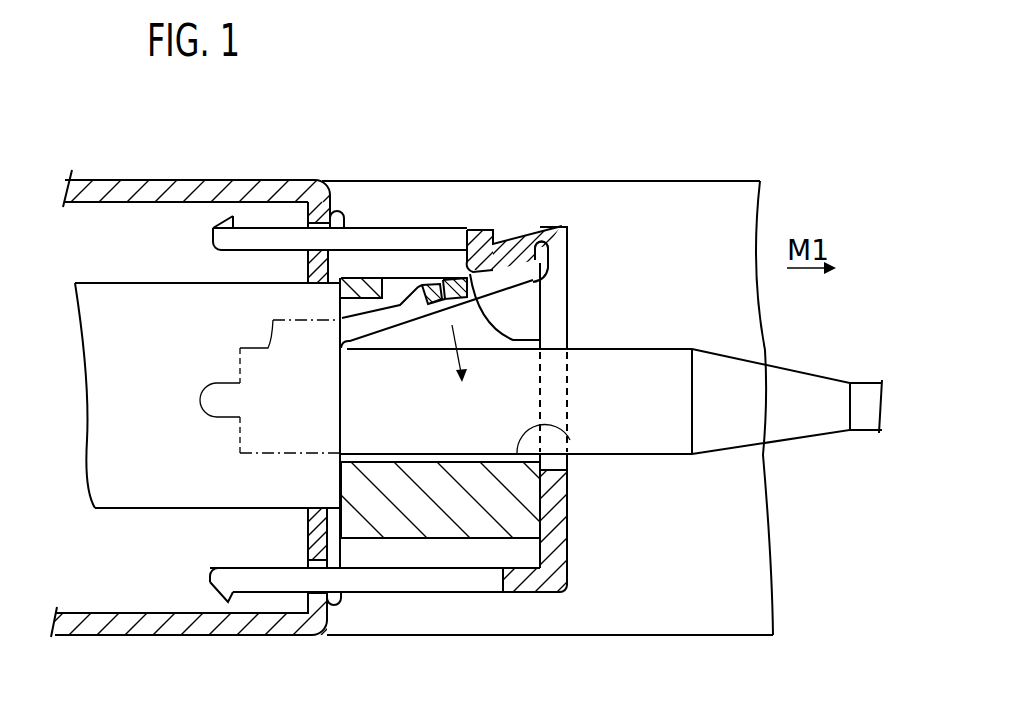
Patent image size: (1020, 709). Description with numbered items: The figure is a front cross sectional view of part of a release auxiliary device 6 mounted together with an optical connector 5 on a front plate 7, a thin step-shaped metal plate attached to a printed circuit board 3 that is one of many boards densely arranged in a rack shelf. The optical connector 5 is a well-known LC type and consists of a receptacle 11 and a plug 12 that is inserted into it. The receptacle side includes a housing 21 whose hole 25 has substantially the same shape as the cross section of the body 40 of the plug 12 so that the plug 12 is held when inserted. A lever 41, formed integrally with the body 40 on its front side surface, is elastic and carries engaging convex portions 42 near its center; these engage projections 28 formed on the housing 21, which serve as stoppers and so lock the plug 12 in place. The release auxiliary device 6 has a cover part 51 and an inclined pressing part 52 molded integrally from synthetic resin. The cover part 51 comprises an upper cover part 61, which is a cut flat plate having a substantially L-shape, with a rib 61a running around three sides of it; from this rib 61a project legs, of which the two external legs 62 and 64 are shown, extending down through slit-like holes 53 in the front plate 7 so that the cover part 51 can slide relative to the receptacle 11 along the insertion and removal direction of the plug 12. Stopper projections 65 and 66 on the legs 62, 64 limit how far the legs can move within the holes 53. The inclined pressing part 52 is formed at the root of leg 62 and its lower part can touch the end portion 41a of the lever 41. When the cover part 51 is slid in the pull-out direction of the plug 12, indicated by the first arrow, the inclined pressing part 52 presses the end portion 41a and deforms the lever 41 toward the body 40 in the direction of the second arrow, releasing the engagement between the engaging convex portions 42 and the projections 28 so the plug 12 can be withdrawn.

The printed circuit board 3 is at (428, 612).
The optical connector 5 is at (545, 150).
The release auxiliary device 6 is at (589, 339).
The front plate 7 is at (158, 627).
The receptacle 11 is at (86, 492).
The plug 12 is at (612, 358).
The housing 21 is at (467, 525).
The hole 25 is at (570, 440).
The projections 28 is at (453, 283).
The body 40 is at (632, 397).
The lever 41 is at (482, 232).
The end portion 41a is at (547, 240).
The engaging convex portions 42 is at (428, 290).
The cover part 51 is at (569, 273).
The inclined pressing part 52 is at (516, 243).
The holes 53 is at (312, 216).
The upper cover part 61 is at (541, 582).
The rib 61a is at (523, 580).
The leg 62 is at (253, 238).
The leg 64 is at (282, 580).
The stopper projection 65 is at (223, 228).
The stopper projection 66 is at (337, 212).